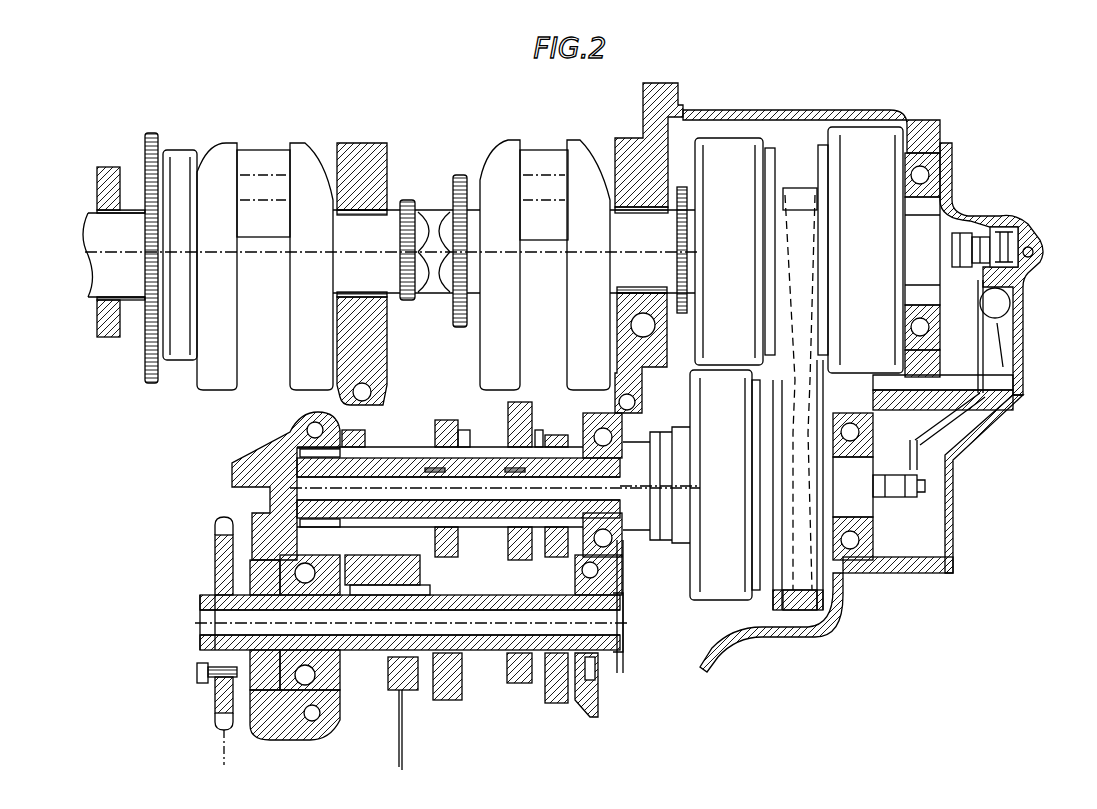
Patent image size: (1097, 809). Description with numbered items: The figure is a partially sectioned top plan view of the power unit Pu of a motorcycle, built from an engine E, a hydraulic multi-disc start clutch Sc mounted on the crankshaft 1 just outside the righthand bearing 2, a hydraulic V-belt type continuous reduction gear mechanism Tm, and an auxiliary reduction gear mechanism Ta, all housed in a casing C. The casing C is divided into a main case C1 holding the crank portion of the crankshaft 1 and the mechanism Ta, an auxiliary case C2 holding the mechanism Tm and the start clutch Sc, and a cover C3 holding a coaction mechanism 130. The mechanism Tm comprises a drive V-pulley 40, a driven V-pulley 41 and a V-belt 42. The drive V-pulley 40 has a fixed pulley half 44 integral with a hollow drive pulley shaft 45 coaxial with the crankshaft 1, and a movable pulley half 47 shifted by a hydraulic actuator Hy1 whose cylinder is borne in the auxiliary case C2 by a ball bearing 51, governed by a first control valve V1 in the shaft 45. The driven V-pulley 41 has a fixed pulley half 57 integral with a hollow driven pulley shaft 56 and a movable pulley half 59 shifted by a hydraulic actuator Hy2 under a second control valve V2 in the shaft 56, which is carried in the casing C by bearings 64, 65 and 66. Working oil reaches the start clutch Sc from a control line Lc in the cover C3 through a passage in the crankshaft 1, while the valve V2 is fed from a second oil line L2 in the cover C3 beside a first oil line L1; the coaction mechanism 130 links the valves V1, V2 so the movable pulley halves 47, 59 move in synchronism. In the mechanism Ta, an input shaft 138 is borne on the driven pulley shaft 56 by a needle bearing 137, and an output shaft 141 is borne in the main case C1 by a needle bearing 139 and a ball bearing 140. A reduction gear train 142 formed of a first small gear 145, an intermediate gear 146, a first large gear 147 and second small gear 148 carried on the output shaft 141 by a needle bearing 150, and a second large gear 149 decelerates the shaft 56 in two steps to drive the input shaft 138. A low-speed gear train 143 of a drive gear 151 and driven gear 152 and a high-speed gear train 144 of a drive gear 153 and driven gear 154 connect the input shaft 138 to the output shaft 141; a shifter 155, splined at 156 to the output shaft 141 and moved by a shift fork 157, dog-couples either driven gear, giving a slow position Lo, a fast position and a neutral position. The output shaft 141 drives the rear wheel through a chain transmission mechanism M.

The crankshaft 1 is at (92, 262).
The bearing 2 is at (638, 207).
The drive V-pulley 40 is at (868, 127).
The driven V-pulley 41 is at (705, 601).
The V-belt 42 is at (803, 612).
The fixed pulley half 44 is at (773, 165).
The drive pulley shaft 45 is at (800, 300).
The movable pulley half 47 is at (822, 173).
The ball bearing 51 is at (920, 166).
The driven pulley shaft 56 is at (495, 487).
The fixed pulley half 57 is at (818, 598).
The movable pulley half 59 is at (775, 605).
The bearing 64 is at (316, 467).
The bearing 65 is at (603, 428).
The bearing 66 is at (850, 423).
The coaction mechanism 130 is at (1003, 341).
The needle bearing 137 is at (435, 472).
The input shaft 138 is at (410, 448).
The needle bearing 139 is at (598, 678).
The ball bearing 140 is at (300, 558).
The output shaft 141 is at (203, 602).
The reduction gear train 142 is at (566, 422).
The low-speed gear train 143 is at (338, 418).
The high-speed gear train 144 is at (442, 420).
The first small gear 145 is at (548, 435).
The intermediate gear 146 is at (555, 505).
The first large gear 147 is at (553, 703).
The second small gear 148 is at (517, 683).
The second large gear 149 is at (520, 402).
The needle bearing 150 is at (522, 605).
The drive gear 151 is at (362, 434).
The driven gear 152 is at (330, 720).
The drive gear 153 is at (462, 430).
The driven gear 154 is at (452, 700).
The shifter 155 is at (383, 570).
The spline 156 is at (400, 596).
The shift fork 157 is at (396, 690).
The engine E is at (541, 112).
The casing C is at (758, 110).
The main case C1 is at (662, 83).
The auxiliary case C2 is at (810, 115).
The cover C3 is at (1024, 285).
The continuous reduction gear mechanism Tm is at (822, 130).
The power unit Pu is at (913, 88).
The hydraulic actuator Hy1 is at (915, 122).
The hydraulic actuator Hy2 is at (680, 578).
The first control valve V1 is at (963, 224).
The second control valve V2 is at (897, 509).
The line L1 is at (1008, 224).
The second oil line L2 is at (940, 487).
The control line Lc is at (1040, 252).
The start clutch Sc is at (729, 251).
The auxiliary reduction gear mechanism Ta is at (412, 388).
The chain transmission mechanism M is at (216, 760).
The slow position Lo is at (420, 771).